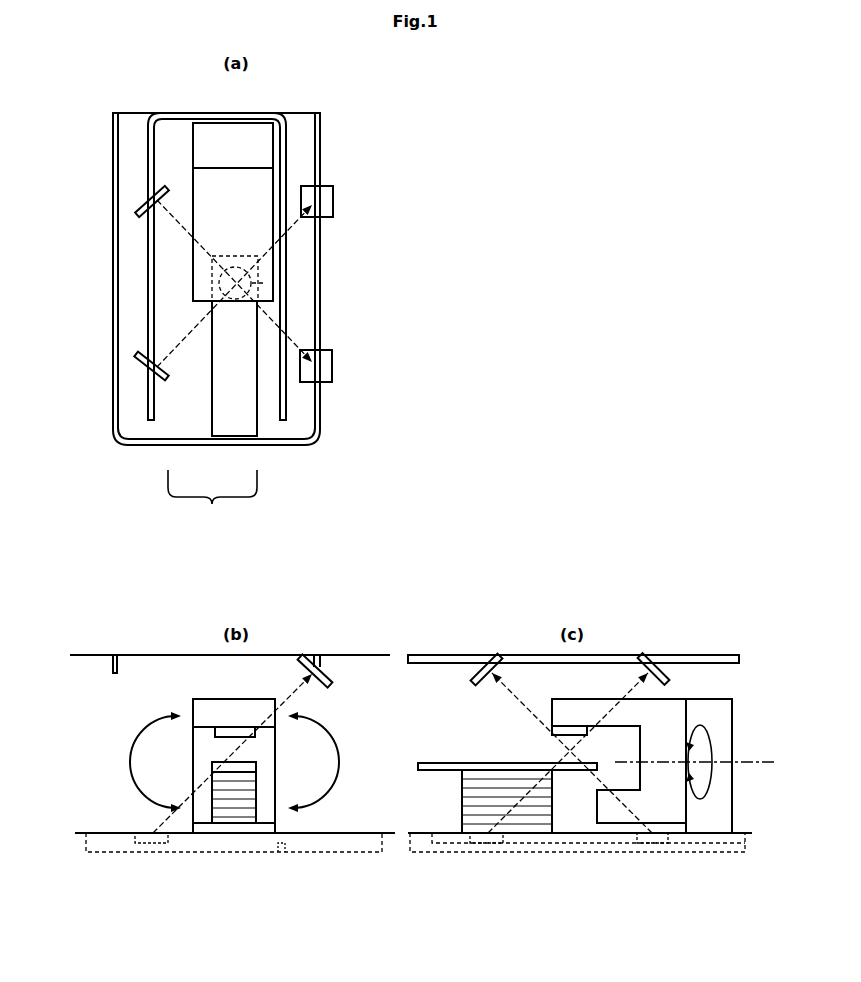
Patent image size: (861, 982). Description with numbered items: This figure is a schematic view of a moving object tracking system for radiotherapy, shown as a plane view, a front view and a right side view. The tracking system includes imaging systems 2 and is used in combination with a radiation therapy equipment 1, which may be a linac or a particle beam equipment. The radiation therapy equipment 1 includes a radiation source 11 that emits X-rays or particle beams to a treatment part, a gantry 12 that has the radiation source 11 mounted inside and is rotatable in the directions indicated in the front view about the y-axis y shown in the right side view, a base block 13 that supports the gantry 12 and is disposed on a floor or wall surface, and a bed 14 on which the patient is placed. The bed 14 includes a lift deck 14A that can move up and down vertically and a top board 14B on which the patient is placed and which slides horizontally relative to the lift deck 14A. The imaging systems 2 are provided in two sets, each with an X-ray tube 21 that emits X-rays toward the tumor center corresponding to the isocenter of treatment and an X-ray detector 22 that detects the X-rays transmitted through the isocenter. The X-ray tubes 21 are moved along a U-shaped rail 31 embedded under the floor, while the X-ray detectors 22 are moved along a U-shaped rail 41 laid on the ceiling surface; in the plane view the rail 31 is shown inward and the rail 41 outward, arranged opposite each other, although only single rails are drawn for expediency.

The radiation therapy equipment 1 is at (182, 133).
The imaging systems 2 is at (212, 501).
The radiation source 11 is at (268, 283).
The gantry 12 is at (272, 187).
The base block 13 is at (267, 139).
The bed 14 is at (219, 757).
The lift deck 14A is at (257, 786).
The top board 14B is at (219, 434).
The X-ray tubes 21 is at (140, 203).
The X-ray detectors 22 is at (328, 196).
The rail for the X-ray tubes 31 is at (279, 113).
The rail for the X-ray detectors 41 is at (320, 300).
The y-axis y is at (745, 772).